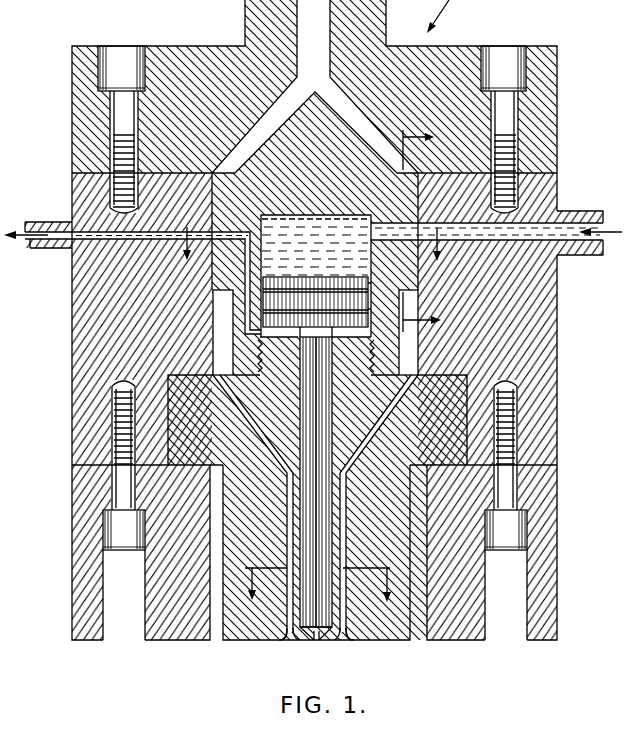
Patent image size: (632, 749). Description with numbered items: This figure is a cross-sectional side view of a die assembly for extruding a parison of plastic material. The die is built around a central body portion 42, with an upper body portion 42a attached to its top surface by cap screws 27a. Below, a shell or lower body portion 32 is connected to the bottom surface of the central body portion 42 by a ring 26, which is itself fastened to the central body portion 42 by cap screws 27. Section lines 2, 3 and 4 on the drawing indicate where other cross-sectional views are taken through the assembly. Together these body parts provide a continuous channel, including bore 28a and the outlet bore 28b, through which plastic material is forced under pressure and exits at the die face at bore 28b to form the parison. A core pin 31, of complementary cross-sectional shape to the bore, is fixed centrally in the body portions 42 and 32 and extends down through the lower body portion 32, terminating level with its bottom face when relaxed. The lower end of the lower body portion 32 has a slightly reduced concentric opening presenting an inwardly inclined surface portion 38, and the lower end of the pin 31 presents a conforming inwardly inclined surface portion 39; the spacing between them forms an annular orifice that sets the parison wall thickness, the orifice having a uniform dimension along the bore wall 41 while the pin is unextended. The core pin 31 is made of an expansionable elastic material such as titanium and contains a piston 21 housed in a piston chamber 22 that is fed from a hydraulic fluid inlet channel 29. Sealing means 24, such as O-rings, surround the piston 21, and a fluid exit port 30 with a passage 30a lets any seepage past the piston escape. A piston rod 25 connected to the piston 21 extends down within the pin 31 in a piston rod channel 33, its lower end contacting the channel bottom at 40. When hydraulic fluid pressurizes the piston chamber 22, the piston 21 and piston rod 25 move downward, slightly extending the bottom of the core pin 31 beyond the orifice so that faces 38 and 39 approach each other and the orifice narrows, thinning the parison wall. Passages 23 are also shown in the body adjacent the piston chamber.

The section line 2- 2 is at (313, 258).
The section line 3- 3 is at (429, 229).
The section line 4- 4 is at (319, 597).
The piston 21 is at (305, 280).
The piston chamber 22 is at (300, 226).
The passage 23 is at (224, 198).
The sealing means 24 is at (370, 298).
The piston rod 25 is at (328, 549).
The ring 26 is at (82, 610).
The cap screws 27 is at (118, 543).
The cap screws 27a is at (127, 60).
The bore 28a is at (223, 334).
The bore 28b is at (344, 641).
The hydraulic fluid inlet channel 29 is at (571, 254).
The fluid exit port 30 is at (247, 328).
The passage 30a is at (62, 250).
The core pin 31 is at (367, 405).
The lower body portion 32 is at (432, 435).
The piston rod channel 33 is at (336, 494).
The inwardly inclined surface portion 38 is at (284, 642).
The inwardly inclined surface portion 39 is at (323, 643).
The bottom of piston rod channel 40 is at (326, 643).
The bore wall 41 is at (291, 516).
The central body portion 42 is at (87, 335).
The upper body portion 42a is at (80, 100).